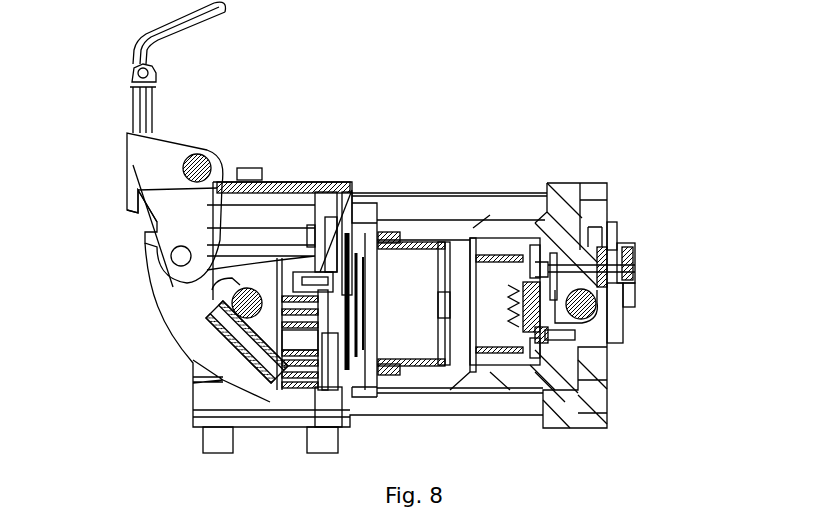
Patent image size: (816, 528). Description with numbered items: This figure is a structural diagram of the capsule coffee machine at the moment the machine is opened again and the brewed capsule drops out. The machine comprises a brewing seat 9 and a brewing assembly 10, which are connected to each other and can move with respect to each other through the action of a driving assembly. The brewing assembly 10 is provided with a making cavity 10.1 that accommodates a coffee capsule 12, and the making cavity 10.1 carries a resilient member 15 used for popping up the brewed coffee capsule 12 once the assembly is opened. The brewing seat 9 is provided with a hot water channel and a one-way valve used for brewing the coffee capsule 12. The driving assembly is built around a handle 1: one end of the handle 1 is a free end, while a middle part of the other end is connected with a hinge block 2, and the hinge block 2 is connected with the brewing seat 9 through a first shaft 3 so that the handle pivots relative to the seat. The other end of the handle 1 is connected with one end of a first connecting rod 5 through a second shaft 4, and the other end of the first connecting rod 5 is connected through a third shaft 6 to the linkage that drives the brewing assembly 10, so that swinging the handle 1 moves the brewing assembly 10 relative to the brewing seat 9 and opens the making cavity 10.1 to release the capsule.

The handle 1 is at (143, 70).
The hinge block 2 is at (160, 147).
The first shaft 3 is at (168, 152).
The second shaft 4 is at (132, 215).
The first connecting rod 5 is at (232, 292).
The third shaft 6 is at (217, 307).
The brewing seat 9 is at (193, 390).
The brewing assembly 10 is at (608, 200).
The making cavity 10.1 is at (578, 347).
The coffee capsule 12 is at (395, 243).
The resilient member 15 is at (637, 247).